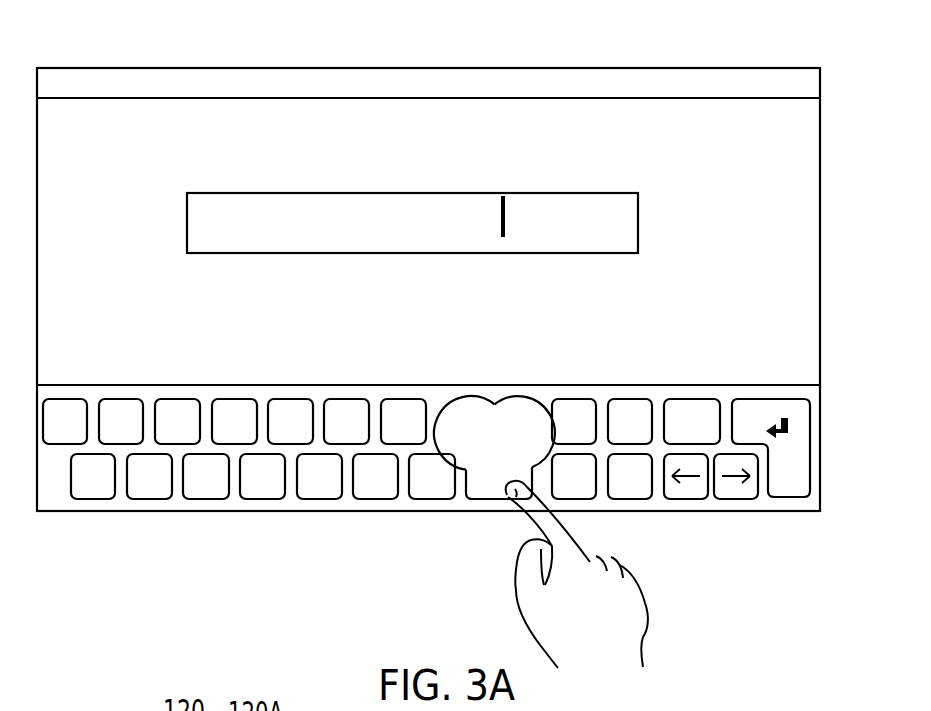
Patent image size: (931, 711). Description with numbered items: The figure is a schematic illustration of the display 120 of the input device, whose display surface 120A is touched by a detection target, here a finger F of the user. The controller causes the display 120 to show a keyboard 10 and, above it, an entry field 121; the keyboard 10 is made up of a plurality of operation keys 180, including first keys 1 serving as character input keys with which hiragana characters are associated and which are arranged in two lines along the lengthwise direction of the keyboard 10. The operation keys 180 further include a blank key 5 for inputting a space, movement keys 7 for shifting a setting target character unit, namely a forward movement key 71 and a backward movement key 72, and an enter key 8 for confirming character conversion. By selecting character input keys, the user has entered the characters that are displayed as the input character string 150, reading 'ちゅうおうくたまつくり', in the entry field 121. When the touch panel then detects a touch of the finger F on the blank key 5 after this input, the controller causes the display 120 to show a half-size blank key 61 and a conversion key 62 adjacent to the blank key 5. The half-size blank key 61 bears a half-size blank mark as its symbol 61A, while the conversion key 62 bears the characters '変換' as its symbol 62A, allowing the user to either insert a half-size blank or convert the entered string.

The display 120 is at (170, 68).
The display surface 120A is at (237, 125).
The entry field 121 is at (187, 205).
The input character string 150 is at (437, 183).
The first key 1 is at (116, 399).
The keyboard 10 is at (428, 463).
The blank key 5 is at (477, 499).
The half-size blank key 61 is at (465, 398).
The symbol 61A is at (452, 421).
The conversion key 62 is at (513, 398).
The symbol 62A is at (532, 411).
The finger F is at (512, 499).
The forward movement key 71 is at (678, 499).
The backward movement key 72 is at (747, 499).
The movement keys 7 is at (711, 540).
The enter key 8 is at (788, 497).
The operation keys 180 is at (428, 311).